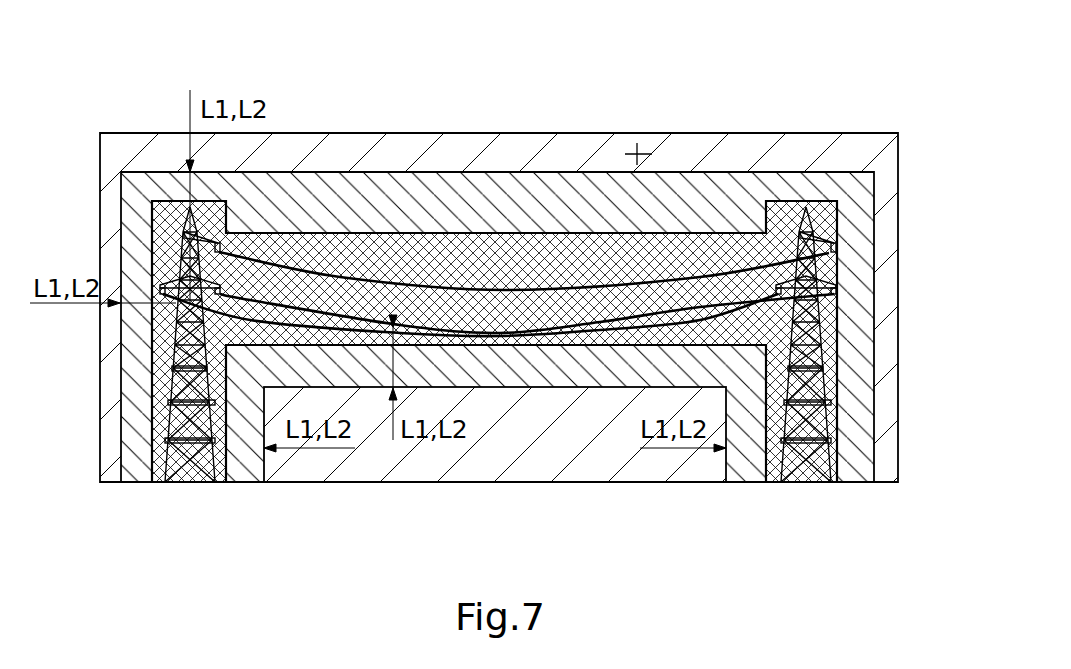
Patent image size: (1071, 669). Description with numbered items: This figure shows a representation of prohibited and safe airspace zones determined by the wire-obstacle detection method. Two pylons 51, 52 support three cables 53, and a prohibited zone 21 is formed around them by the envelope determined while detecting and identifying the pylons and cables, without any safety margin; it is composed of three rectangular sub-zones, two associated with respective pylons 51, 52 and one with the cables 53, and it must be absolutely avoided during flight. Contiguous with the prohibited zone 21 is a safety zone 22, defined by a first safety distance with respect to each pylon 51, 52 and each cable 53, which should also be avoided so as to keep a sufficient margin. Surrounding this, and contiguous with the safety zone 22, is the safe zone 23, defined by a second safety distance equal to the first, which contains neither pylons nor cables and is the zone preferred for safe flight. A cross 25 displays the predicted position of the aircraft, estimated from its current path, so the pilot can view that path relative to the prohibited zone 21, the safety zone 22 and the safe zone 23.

The prohibited zone 21 is at (826, 211).
The safety zone 22 is at (851, 336).
The safe zone 23 is at (817, 147).
The cross 25 is at (637, 153).
The pylon 51 is at (180, 483).
The pylon 52 is at (802, 483).
The cable 53 is at (613, 333).